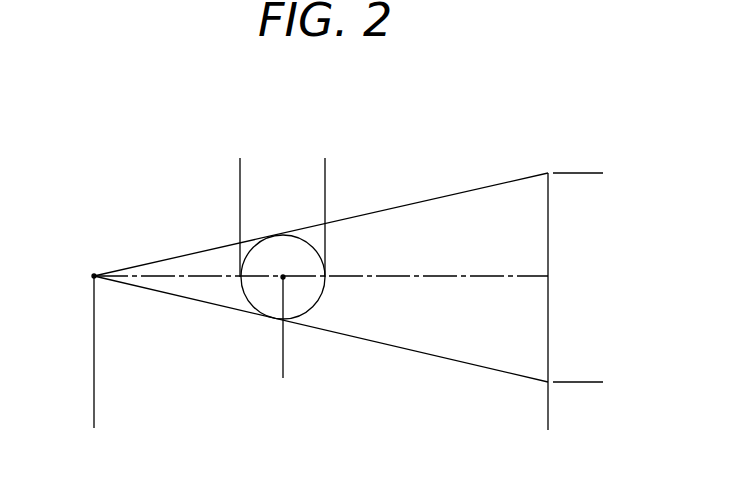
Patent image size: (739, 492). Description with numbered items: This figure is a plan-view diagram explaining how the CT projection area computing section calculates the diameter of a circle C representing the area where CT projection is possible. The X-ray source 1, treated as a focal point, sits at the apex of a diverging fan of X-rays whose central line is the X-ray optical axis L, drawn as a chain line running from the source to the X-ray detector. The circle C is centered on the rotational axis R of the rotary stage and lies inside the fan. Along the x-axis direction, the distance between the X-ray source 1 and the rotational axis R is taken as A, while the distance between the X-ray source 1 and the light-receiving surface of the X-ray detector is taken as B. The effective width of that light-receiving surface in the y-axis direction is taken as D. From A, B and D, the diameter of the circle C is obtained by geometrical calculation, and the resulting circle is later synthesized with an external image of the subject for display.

The X-ray source 1 is at (91, 261).
The distance between the X-ray source and the rotational axis A is at (283, 369).
The distance between the X-ray source and the light-receiving surface of the X-ray d B is at (94, 423).
The circle C is at (323, 292).
The effective width of the light-receiving surface of the X-ray detector D is at (593, 173).
The X-ray optical axis L is at (463, 268).
The rotational axis R is at (284, 276).